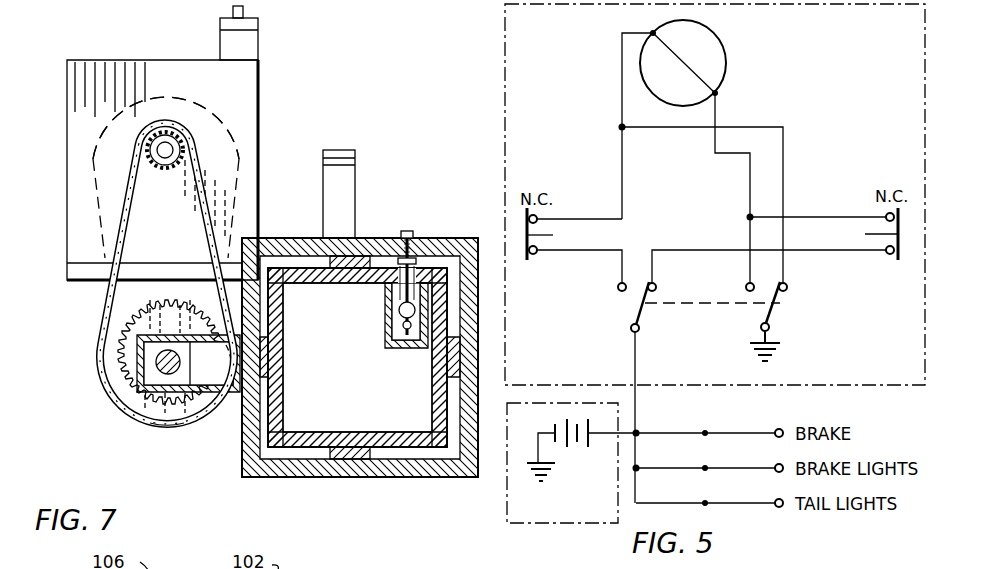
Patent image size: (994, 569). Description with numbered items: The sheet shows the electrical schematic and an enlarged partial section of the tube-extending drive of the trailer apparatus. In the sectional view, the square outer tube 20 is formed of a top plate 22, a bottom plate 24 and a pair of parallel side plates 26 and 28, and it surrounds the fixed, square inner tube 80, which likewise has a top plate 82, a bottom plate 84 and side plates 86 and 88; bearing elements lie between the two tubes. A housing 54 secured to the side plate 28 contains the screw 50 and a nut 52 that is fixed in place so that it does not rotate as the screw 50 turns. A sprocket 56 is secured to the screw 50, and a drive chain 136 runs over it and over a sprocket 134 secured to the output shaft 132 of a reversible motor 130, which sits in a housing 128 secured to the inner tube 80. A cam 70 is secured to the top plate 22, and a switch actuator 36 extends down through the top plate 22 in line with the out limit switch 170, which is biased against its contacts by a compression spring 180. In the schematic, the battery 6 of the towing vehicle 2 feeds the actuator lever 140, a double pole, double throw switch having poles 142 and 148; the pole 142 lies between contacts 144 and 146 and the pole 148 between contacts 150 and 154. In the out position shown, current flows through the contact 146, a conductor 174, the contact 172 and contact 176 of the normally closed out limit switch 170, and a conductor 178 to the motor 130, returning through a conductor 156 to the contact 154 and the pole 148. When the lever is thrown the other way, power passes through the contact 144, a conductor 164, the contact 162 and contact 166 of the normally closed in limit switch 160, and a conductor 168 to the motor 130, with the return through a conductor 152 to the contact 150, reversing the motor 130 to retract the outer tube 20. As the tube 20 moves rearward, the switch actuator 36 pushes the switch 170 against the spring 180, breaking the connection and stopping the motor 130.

In FIG. 7, the housing 128 is at (113, 57).
In FIG. 5, the housing 128 is at (503, 38).
In FIG. 7, the reversible motor 130 is at (233, 129).
In FIG. 5, the reversible motor 130 is at (697, 31).
In FIG. 7, the output shaft 132 is at (165, 178).
In FIG. 7, the sprocket 134 is at (173, 118).
In FIG. 7, the drive chain 136 is at (110, 312).
In FIG. 7, the actuator lever 140 is at (250, 8).
In FIG. 5, the actuator lever 140 is at (628, 305).
In FIG. 7, the cam 70 is at (322, 190).
In FIG. 7, the switch actuator 36 is at (376, 238).
In FIG. 7, the top plate 22 is at (432, 240).
In FIG. 7, the outer tube 20 is at (313, 478).
In FIG. 7, the bottom plate 24 is at (433, 480).
In FIG. 7, the side plate 26 is at (478, 455).
In FIG. 7, the side plate 28 is at (243, 440).
In FIG. 7, the inner tube 80 is at (307, 426).
In FIG. 7, the top plate 82 is at (330, 284).
In FIG. 7, the bottom plate 84 is at (374, 430).
In FIG. 7, the side plate 86 is at (432, 377).
In FIG. 7, the side plate 88 is at (287, 392).
In FIG. 7, the out limit switch 170 is at (398, 339).
In FIG. 5, the out limit switch 170 is at (900, 247).
In FIG. 7, the compression spring 180 is at (399, 312).
In FIG. 7, the screw 50 is at (153, 363).
In FIG. 7, the nut 52 is at (150, 375).
In FIG. 7, the housing 54 is at (127, 408).
In FIG. 7, the sprocket 56 is at (157, 430).
In FIG. 5, the conductor 168 is at (619, 125).
In FIG. 5, the conductor 156 is at (784, 160).
In FIG. 5, the conductor 152 is at (748, 196).
In FIG. 5, the conductor 178 is at (797, 216).
In FIG. 5, the conductor 174 is at (845, 250).
In FIG. 5, the contact 176 is at (886, 216).
In FIG. 5, the contact 172 is at (886, 253).
In FIG. 5, the contact 166 is at (538, 218).
In FIG. 5, the conductor 164 is at (580, 250).
In FIG. 5, the switch contact 162 is at (538, 254).
In FIG. 5, the in limit switch 160 is at (525, 258).
In FIG. 5, the contact 144 is at (618, 289).
In FIG. 5, the contact 146 is at (657, 287).
In FIG. 5, the pole 142 is at (642, 328).
In FIG. 5, the contact 150 is at (748, 283).
In FIG. 5, the contact 154 is at (788, 289).
In FIG. 5, the pole 148 is at (775, 302).
In FIG. 5, the battery 6 is at (553, 425).
In FIG. 5, the towing vehicle 2 is at (521, 527).